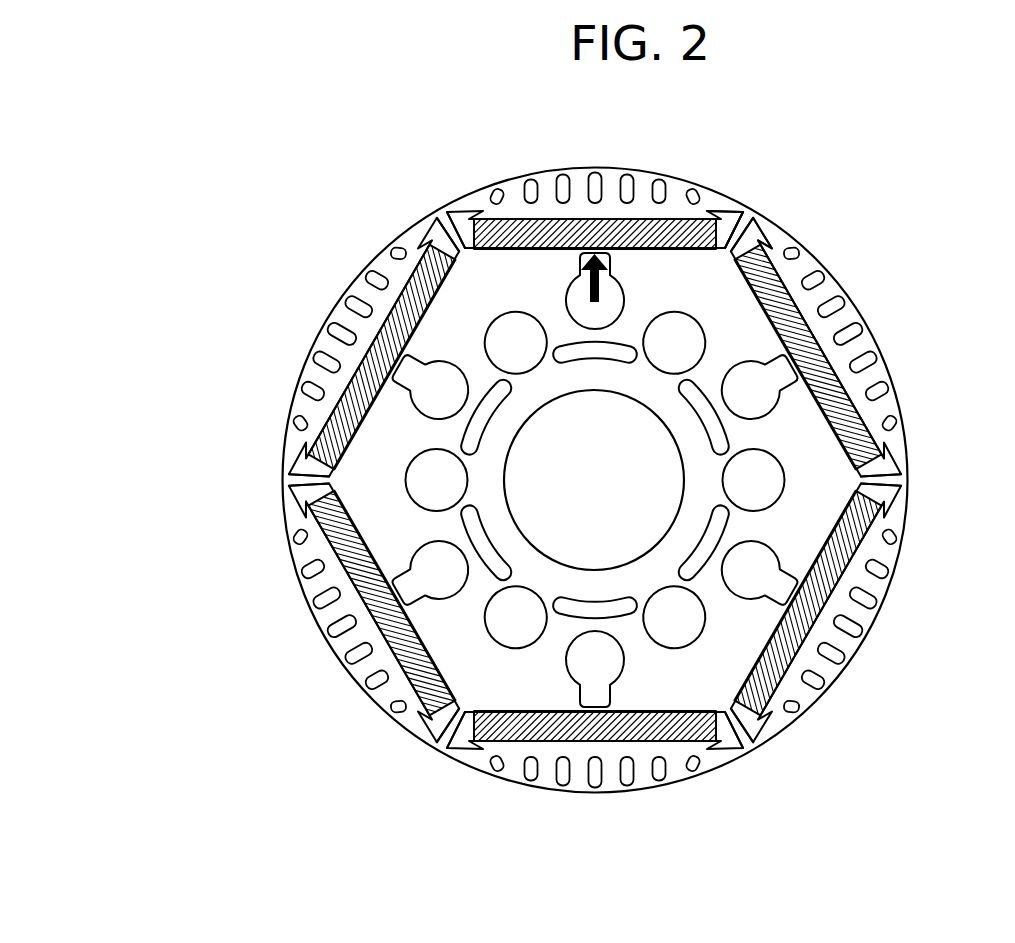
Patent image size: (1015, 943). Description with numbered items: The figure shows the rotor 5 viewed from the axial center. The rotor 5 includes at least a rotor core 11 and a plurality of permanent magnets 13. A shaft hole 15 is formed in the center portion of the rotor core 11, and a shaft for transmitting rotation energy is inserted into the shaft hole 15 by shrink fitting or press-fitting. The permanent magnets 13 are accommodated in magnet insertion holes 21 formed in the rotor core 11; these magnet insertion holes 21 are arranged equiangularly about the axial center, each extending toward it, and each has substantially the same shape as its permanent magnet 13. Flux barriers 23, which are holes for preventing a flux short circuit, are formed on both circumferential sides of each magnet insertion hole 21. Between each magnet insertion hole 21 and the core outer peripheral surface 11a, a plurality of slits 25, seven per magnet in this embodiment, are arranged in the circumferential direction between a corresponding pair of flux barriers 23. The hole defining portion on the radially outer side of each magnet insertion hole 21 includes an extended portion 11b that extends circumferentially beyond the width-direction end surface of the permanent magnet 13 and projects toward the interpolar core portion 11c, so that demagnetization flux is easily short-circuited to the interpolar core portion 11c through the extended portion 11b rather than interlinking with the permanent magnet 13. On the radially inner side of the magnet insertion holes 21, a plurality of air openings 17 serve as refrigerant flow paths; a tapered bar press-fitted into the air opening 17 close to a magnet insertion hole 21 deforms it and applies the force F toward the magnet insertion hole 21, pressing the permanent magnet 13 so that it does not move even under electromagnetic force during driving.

The rotor 5 is at (153, 224).
The rotor core 11 is at (340, 330).
The core outer peripheral surface 11a is at (812, 258).
The extended portion 11b is at (738, 205).
The interpolar core portion 11c is at (757, 220).
The permanent magnet 13 is at (547, 217).
The shaft hole 15 is at (620, 483).
The air opening 17 is at (437, 477).
The magnet insertion hole 21 is at (430, 232).
The flux barrier 23 is at (434, 228).
The slit 25 is at (603, 188).
The force F is at (600, 284).